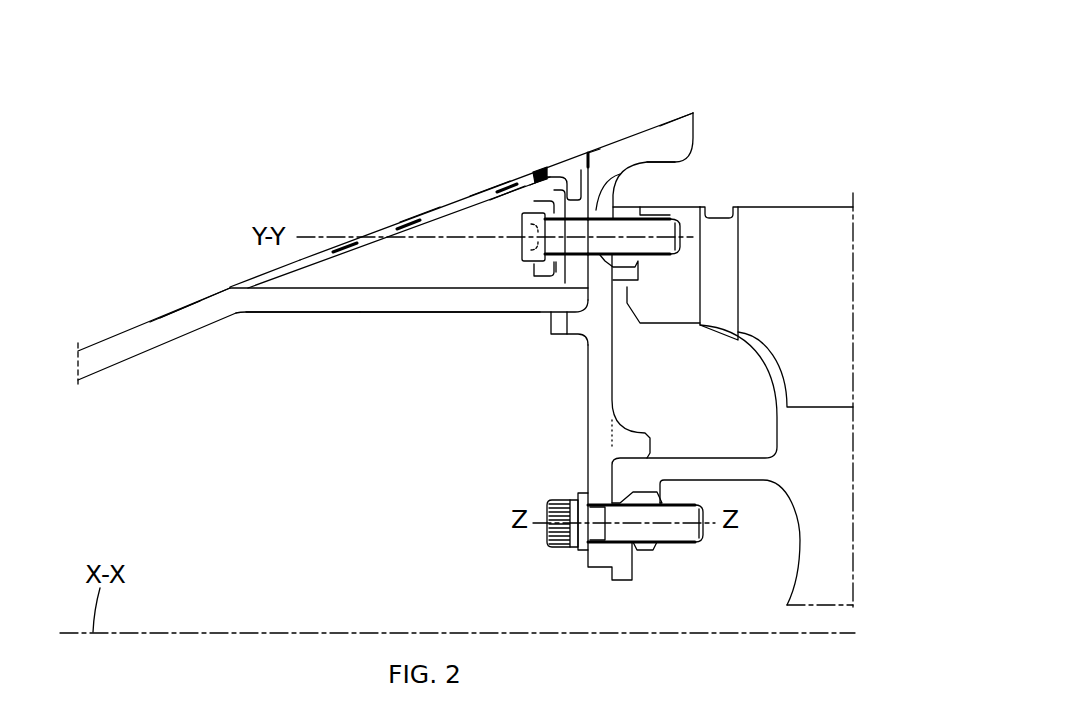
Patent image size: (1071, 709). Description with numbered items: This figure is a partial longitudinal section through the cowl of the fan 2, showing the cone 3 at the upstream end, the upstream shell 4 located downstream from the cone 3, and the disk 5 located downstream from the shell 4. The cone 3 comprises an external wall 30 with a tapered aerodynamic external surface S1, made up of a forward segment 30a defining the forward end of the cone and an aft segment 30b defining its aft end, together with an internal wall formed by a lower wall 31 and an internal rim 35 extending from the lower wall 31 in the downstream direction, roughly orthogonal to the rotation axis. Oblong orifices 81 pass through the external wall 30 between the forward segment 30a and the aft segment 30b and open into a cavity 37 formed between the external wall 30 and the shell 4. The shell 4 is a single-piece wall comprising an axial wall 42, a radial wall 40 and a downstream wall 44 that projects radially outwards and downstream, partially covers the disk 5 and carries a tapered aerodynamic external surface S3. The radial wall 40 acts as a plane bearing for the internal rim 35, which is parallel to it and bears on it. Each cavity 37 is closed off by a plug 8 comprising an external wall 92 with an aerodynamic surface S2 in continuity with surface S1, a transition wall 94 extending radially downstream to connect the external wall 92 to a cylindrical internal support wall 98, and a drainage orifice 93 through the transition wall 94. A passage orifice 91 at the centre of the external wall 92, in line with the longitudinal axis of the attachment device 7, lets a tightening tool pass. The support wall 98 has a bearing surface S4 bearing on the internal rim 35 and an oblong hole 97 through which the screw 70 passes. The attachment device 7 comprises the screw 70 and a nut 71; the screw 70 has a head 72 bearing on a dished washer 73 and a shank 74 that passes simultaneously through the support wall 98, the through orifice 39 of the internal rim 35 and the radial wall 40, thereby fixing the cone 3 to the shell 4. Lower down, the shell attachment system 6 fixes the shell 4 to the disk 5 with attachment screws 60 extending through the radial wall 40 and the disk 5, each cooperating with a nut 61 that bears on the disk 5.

The fan 2 is at (233, 138).
The cone 3 is at (143, 327).
The aerodynamic external surface S1 is at (162, 317).
The aerodynamic external surface S2 is at (513, 190).
The tapered aerodynamic external surface S3 is at (676, 132).
The bearing surface S4 is at (536, 180).
The external wall 30 is at (183, 320).
The forward segment 30a is at (175, 318).
The aft segment 30b is at (578, 168).
The lower wall 31 is at (410, 300).
The cavity 37 is at (357, 314).
The orifice 81 is at (233, 288).
The passage orifice 91 is at (362, 212).
The external wall 92 is at (427, 215).
The drainage orifice 93 is at (478, 195).
The plug 8 is at (460, 201).
The internal support wall 98 is at (553, 176).
The transition wall 94 is at (477, 293).
The head 72 is at (526, 262).
The dished washer 73 is at (548, 270).
The oblong hole 97 is at (558, 275).
The axial wall 42 is at (560, 335).
The radial wall 40 is at (600, 372).
The upstream shell 4 is at (595, 477).
The downstream wall 44 is at (690, 130).
The internal rim 35 is at (598, 205).
The through orifice 39 is at (625, 205).
The attachment device 7 is at (782, 150).
The screw 70 is at (635, 212).
The nut 71 is at (665, 230).
The shank 74 is at (702, 247).
The attachment screw 60 is at (693, 528).
The nut 61 is at (640, 545).
The shell attachment system 6 is at (781, 598).
The disk 5 is at (807, 557).